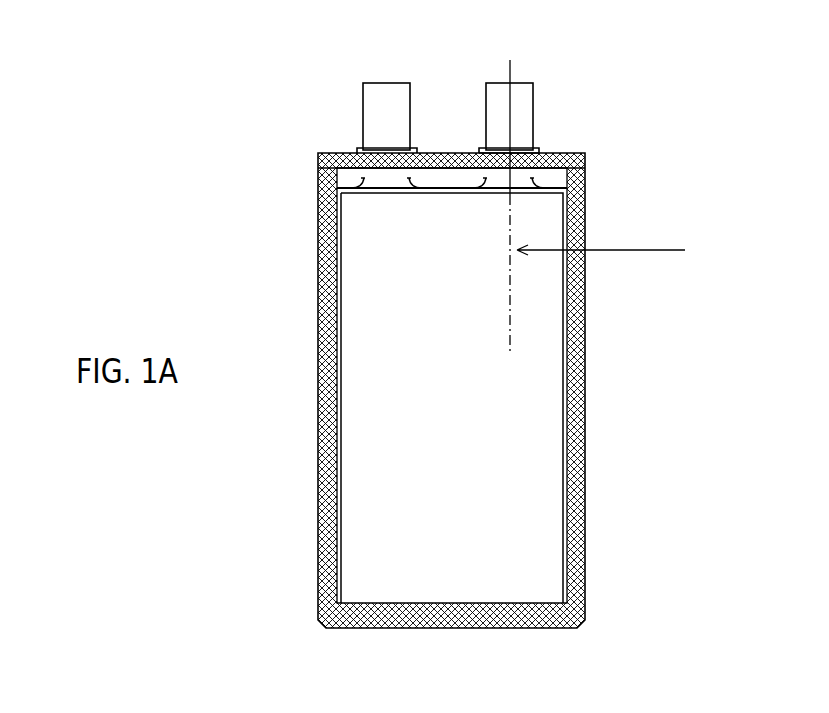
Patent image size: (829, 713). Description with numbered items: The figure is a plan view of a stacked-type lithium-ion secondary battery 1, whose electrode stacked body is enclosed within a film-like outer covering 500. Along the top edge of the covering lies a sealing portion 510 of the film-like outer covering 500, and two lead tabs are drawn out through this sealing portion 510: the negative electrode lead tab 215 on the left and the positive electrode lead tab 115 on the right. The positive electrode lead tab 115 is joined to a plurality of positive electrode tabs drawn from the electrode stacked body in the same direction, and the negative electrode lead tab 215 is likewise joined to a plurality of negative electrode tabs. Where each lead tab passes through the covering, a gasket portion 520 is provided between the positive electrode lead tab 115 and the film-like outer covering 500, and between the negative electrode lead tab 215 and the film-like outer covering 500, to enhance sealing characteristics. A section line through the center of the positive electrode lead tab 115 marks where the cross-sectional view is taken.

The stacked-type lithium-ion secondary battery 1 is at (243, 27).
The film-like outer covering 500 is at (579, 325).
The sealing portion 510 is at (433, 152).
The negative electrode lead tab 215 is at (366, 127).
The positive electrode lead tab 115 is at (514, 105).
The gasket portion 520 is at (517, 149).